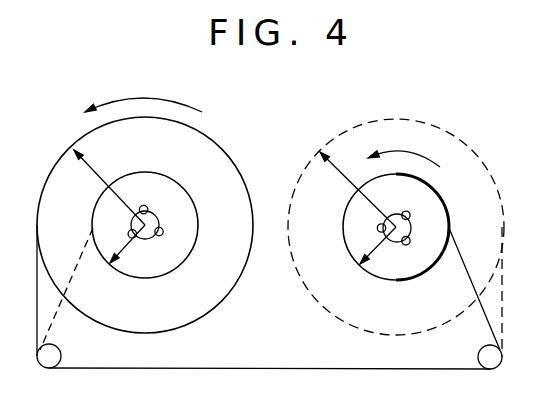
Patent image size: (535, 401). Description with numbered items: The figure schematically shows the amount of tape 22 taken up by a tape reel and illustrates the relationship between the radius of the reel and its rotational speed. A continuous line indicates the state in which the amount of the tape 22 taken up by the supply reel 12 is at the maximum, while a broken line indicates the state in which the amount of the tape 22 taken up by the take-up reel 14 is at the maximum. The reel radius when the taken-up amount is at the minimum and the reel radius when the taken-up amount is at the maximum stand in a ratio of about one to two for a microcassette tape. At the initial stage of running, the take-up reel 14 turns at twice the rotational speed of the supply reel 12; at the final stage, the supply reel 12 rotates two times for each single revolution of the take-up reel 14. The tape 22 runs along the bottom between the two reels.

The supply reel 12 is at (182, 207).
The take-up reel 14 is at (433, 218).
The tape 22 is at (275, 368).